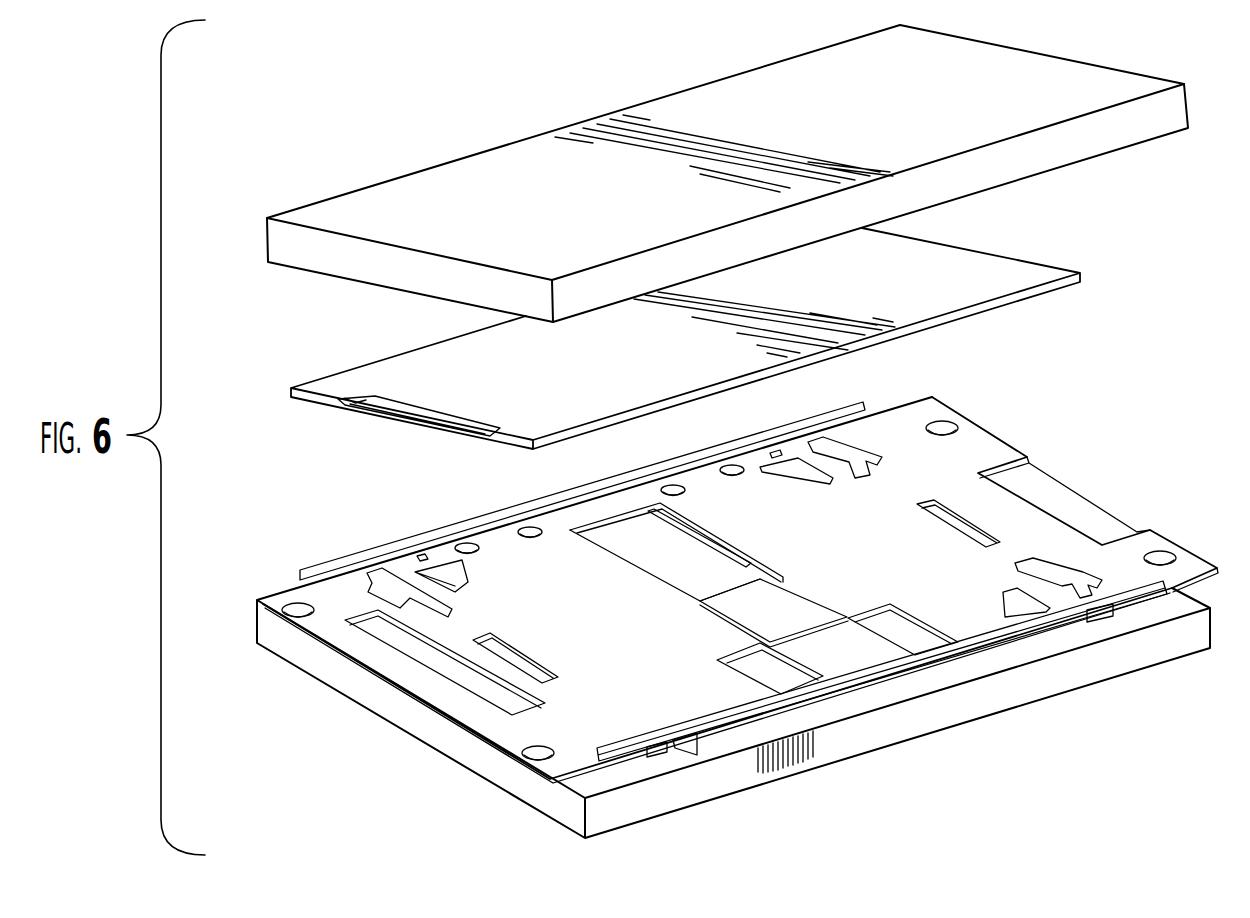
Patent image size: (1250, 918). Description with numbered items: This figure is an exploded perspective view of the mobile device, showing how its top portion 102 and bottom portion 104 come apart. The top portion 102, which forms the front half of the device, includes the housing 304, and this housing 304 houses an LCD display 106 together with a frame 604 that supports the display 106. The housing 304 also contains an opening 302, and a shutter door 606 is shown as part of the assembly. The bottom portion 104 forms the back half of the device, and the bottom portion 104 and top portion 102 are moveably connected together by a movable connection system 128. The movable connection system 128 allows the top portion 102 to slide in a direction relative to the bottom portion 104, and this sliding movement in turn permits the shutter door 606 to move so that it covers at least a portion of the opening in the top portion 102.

The top portion 102 is at (727, 173).
The housing 304 is at (713, 82).
The LCD display 106 is at (998, 250).
The frame 604 is at (897, 435).
The movable connection system 128 is at (513, 650).
The opening 302 is at (677, 565).
The shutter door 606 is at (718, 620).
The bottom portion 104 is at (572, 806).